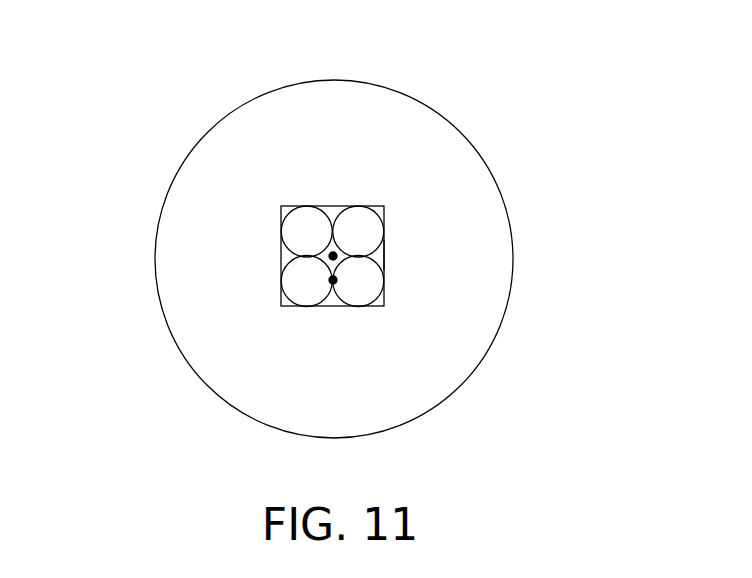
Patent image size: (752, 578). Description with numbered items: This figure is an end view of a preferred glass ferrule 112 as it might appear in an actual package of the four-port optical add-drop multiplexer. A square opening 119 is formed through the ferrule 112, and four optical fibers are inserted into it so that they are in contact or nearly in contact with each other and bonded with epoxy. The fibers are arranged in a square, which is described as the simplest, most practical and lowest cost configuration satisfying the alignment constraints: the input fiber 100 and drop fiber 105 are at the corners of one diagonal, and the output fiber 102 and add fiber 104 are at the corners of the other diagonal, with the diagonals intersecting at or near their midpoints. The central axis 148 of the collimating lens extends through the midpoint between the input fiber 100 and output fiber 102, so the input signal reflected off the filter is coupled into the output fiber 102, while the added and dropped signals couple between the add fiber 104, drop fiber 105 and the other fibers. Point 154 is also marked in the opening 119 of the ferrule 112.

The input fiber 100 is at (368, 284).
The output fiber 102 is at (300, 284).
The add fiber 104 is at (368, 218).
The drop fiber 105 is at (299, 222).
The glass ferrule 112 is at (425, 412).
The square opening 119 is at (398, 251).
The central axis 148 is at (333, 280).
The interstitial point 154 is at (333, 256).